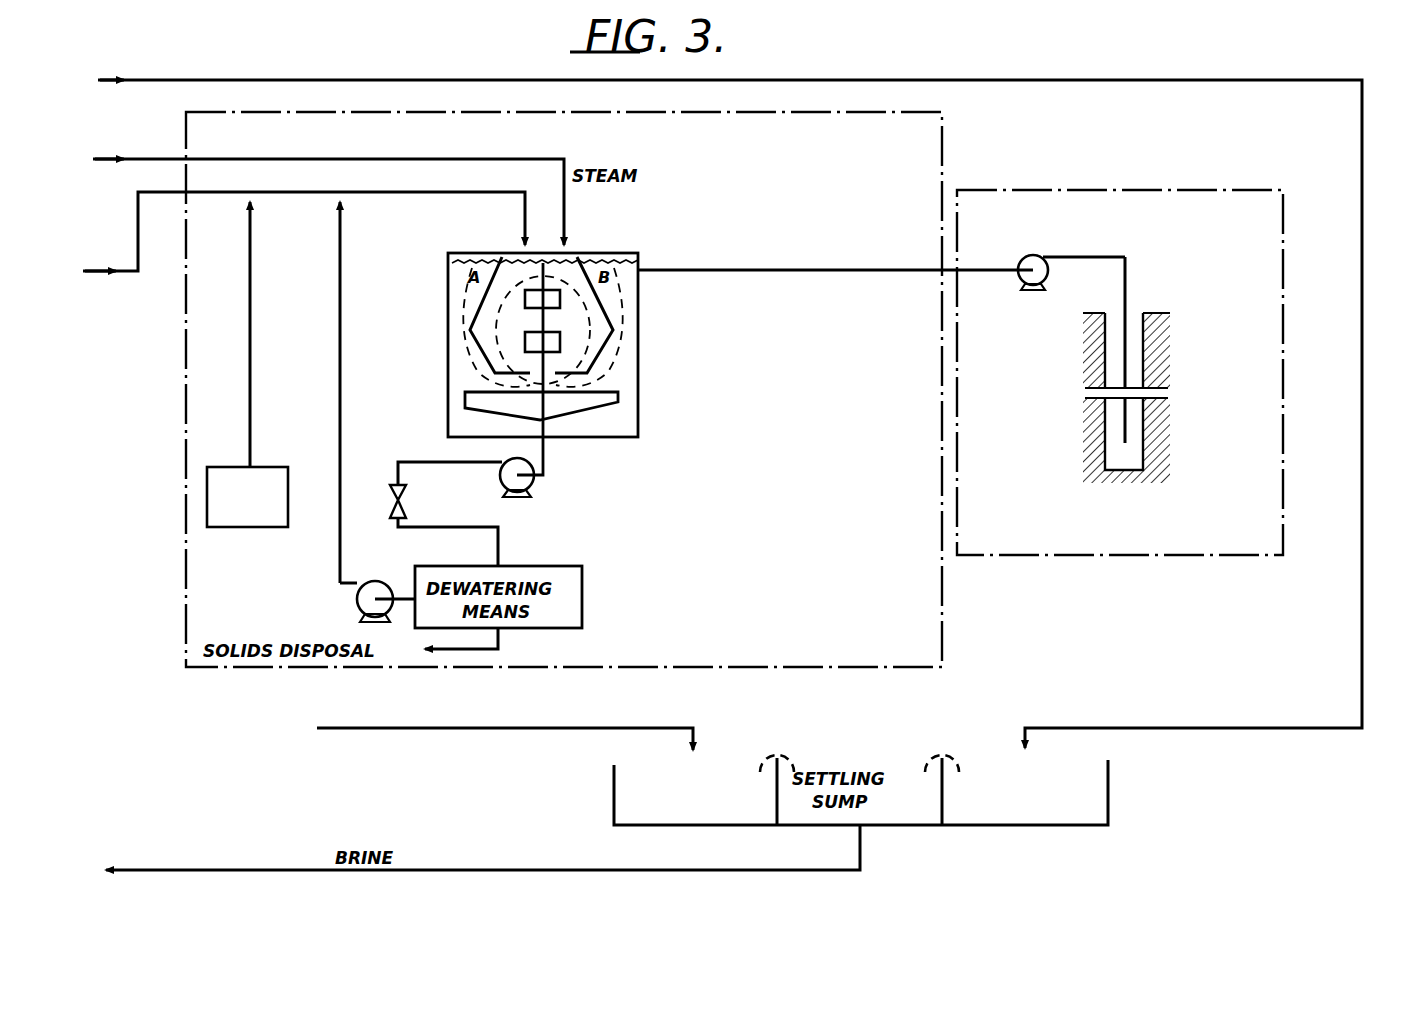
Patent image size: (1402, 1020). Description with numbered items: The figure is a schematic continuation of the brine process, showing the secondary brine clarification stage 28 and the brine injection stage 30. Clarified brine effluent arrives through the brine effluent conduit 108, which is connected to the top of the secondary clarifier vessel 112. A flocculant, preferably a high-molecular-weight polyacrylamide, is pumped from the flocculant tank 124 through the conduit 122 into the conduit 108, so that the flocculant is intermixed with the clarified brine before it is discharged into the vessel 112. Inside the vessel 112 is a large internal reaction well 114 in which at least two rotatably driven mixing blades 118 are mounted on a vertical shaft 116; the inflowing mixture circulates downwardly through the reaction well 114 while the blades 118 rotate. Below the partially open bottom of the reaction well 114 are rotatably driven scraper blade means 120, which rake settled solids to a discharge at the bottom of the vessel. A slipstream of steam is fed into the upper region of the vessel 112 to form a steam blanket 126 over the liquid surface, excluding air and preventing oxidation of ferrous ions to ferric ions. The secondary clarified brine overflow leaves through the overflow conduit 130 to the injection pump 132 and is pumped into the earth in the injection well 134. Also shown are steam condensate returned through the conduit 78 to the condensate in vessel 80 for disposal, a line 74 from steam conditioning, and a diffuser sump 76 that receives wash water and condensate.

The secondary brine clarification stage 28 is at (185, 632).
The brine injection stage 30 is at (1141, 557).
The line from steam conditioning 74 is at (540, 728).
The diffuser sump 76 is at (614, 806).
The conduit 78 is at (1163, 728).
The condensate in vessel 80 is at (1108, 806).
The brine effluent conduit 108 is at (96, 275).
The secondary clarifier vessel 112 is at (638, 365).
The reaction well 114 is at (478, 345).
The vertical shaft 116 is at (560, 298).
The mixing blades 118 is at (560, 345).
The scraper blade means 120 is at (618, 402).
The conduit 122 is at (250, 356).
The flocculant tank 124 is at (266, 527).
The steam blanket 126 is at (448, 253).
The overflow conduit 130 is at (830, 272).
The injection pump 132 is at (1023, 258).
The injection well 134 is at (534, 486).